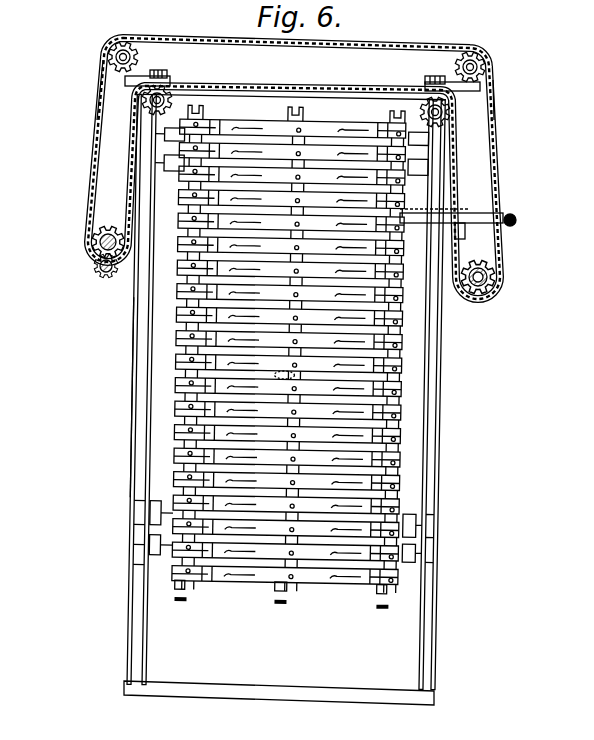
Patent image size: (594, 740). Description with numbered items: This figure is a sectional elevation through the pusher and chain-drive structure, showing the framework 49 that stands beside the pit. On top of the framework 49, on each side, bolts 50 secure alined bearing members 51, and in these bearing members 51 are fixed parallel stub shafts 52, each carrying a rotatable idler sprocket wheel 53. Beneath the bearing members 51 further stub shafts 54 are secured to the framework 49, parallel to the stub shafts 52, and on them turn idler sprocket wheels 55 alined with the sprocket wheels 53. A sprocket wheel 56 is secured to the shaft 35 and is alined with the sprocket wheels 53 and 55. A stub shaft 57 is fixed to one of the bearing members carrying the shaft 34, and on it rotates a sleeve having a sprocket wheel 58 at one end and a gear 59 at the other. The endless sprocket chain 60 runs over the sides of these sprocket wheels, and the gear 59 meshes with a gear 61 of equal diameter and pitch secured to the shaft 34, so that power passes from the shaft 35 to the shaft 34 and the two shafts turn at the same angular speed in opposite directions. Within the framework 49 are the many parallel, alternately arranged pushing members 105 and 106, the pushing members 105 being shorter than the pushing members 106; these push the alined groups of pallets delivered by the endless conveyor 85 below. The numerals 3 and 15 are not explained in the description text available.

The base 3 is at (35, 692).
The frame 15 is at (67, 397).
The shaft 34 is at (108, 272).
The shaft 35 is at (482, 288).
The framework 49 is at (265, 391).
The bolts 50 is at (168, 70).
The bearing members 51 is at (148, 68).
The stub shafts 52 is at (116, 47).
The idler sprocket wheel 53 is at (118, 78).
The stub shafts 54 is at (168, 94).
The idler sprocket wheels 55 is at (146, 112).
The sprocket wheel 56 is at (494, 277).
The stub shaft 57 is at (98, 248).
The sprocket wheel 58 is at (108, 226).
The gear 59 is at (98, 255).
The endless sprocket chain 60 is at (520, 200).
The gear 61 is at (100, 276).
The endless conveyor 85 is at (380, 609).
The pushing members 105 is at (397, 505).
The pushing members 106 is at (400, 433).